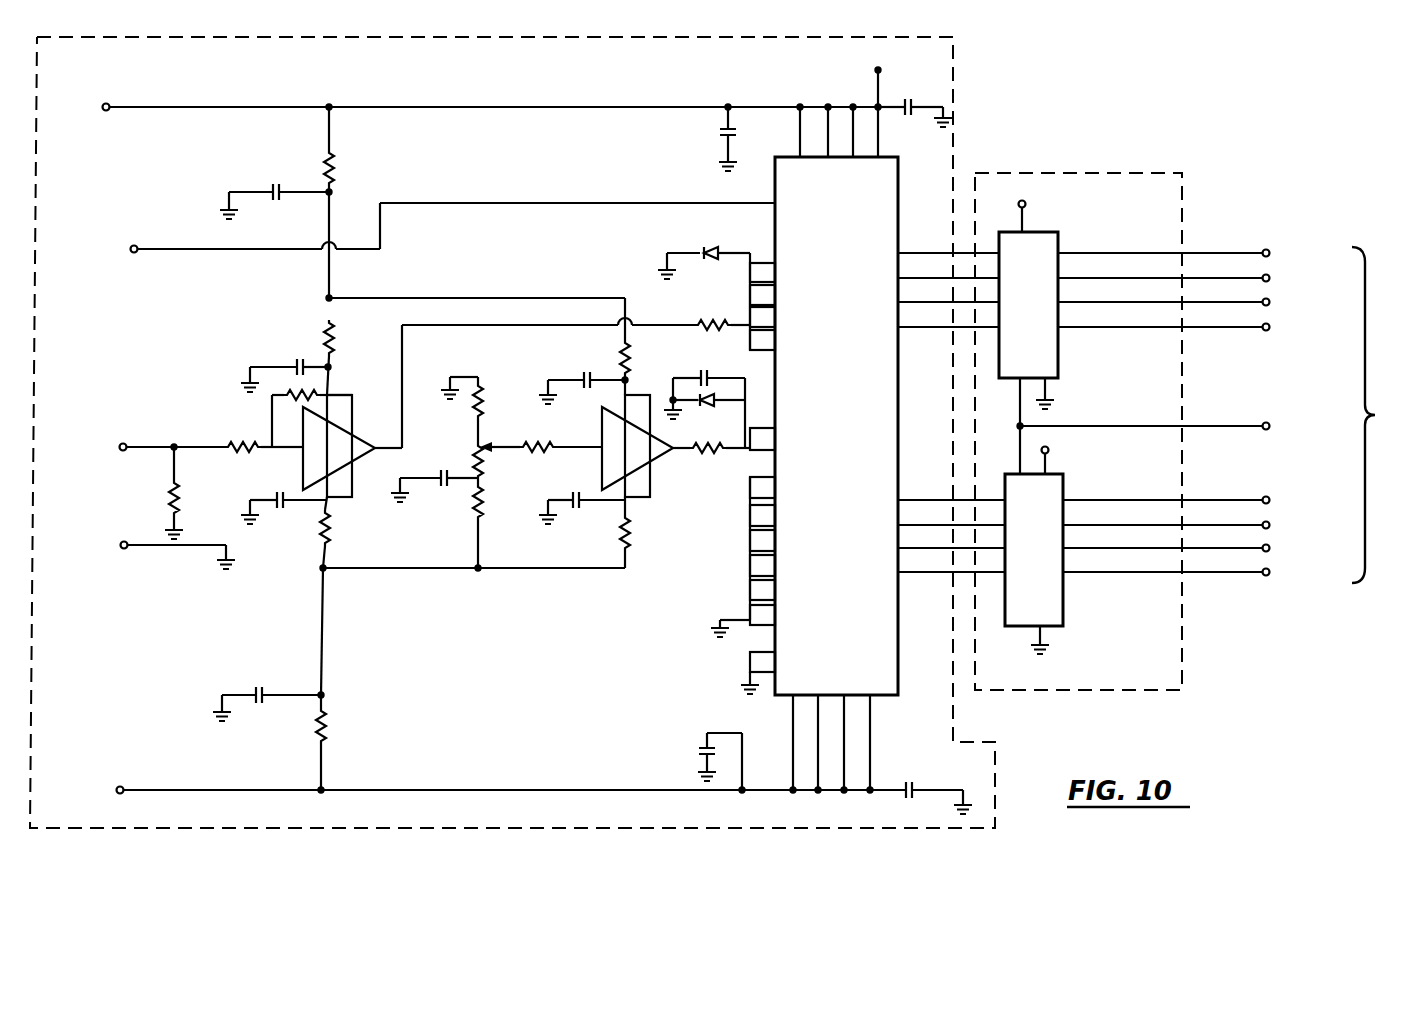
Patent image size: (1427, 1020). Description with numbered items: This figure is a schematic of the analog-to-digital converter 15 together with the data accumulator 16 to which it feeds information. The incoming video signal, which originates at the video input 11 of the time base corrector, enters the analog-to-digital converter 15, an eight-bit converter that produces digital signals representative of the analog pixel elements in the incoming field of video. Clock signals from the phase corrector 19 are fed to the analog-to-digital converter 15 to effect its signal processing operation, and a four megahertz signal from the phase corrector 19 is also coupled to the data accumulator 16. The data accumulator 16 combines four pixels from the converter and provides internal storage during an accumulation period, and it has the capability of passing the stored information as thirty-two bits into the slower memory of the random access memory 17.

The analog-to-digital converter 15 is at (604, 37).
The data accumulator 16 is at (1185, 190).
The random access memory 17 is at (1386, 415).
The phase corrector 19 is at (703, 346).
The input 11 is at (145, 452).